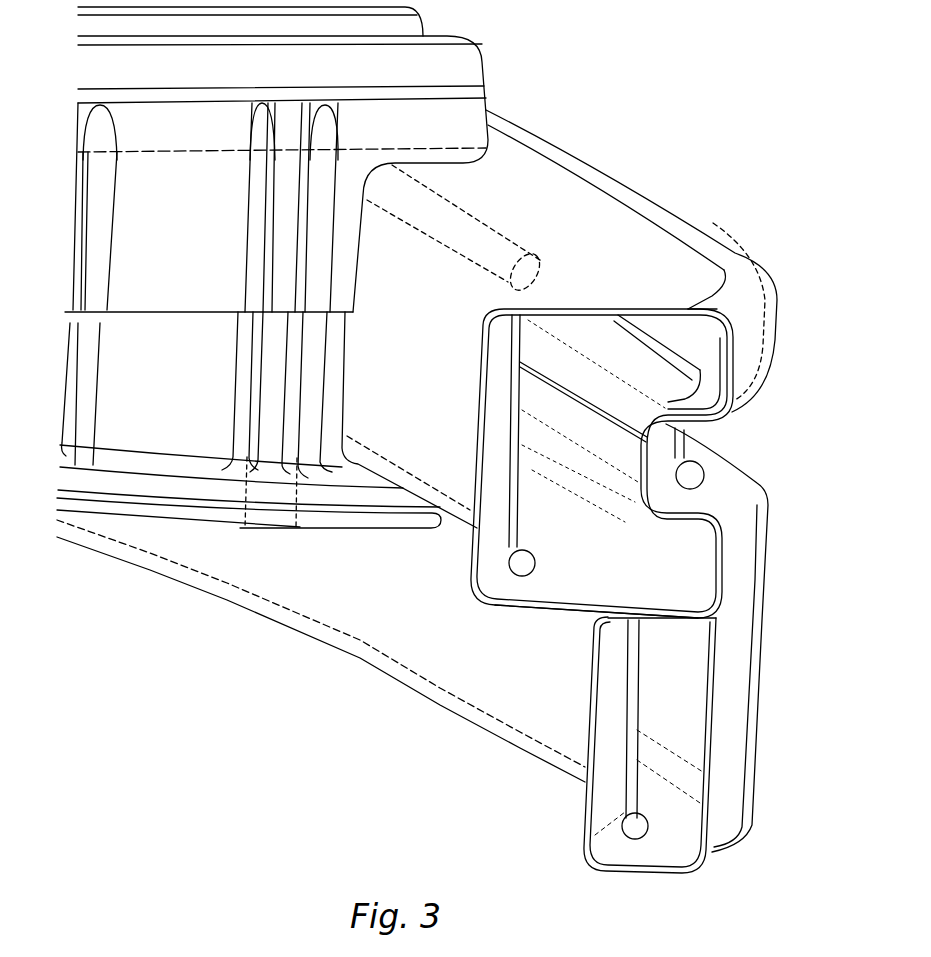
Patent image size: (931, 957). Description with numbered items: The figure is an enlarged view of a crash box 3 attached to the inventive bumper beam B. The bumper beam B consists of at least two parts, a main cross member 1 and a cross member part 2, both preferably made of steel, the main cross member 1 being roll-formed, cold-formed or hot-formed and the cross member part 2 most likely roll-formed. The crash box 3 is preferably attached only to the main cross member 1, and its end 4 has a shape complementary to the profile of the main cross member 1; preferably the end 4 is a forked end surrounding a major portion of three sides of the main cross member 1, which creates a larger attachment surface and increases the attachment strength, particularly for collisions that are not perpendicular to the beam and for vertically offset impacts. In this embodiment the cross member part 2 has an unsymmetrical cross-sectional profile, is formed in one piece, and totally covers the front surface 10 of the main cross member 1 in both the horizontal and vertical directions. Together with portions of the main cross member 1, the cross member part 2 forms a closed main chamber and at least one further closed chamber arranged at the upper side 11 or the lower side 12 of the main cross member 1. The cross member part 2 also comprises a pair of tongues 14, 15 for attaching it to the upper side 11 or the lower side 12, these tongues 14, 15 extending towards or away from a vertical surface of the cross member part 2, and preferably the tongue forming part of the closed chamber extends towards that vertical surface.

The main cross member 1 is at (433, 445).
The cross member part 2 is at (762, 498).
The crash box 3 is at (200, 432).
The end of crash box 4 is at (441, 110).
The front surface 10 is at (714, 573).
The upper side 11 is at (593, 233).
The lower side 12 is at (559, 612).
The tongue 14 is at (698, 307).
The tongue 15 is at (680, 620).
The bumper beam B is at (618, 164).